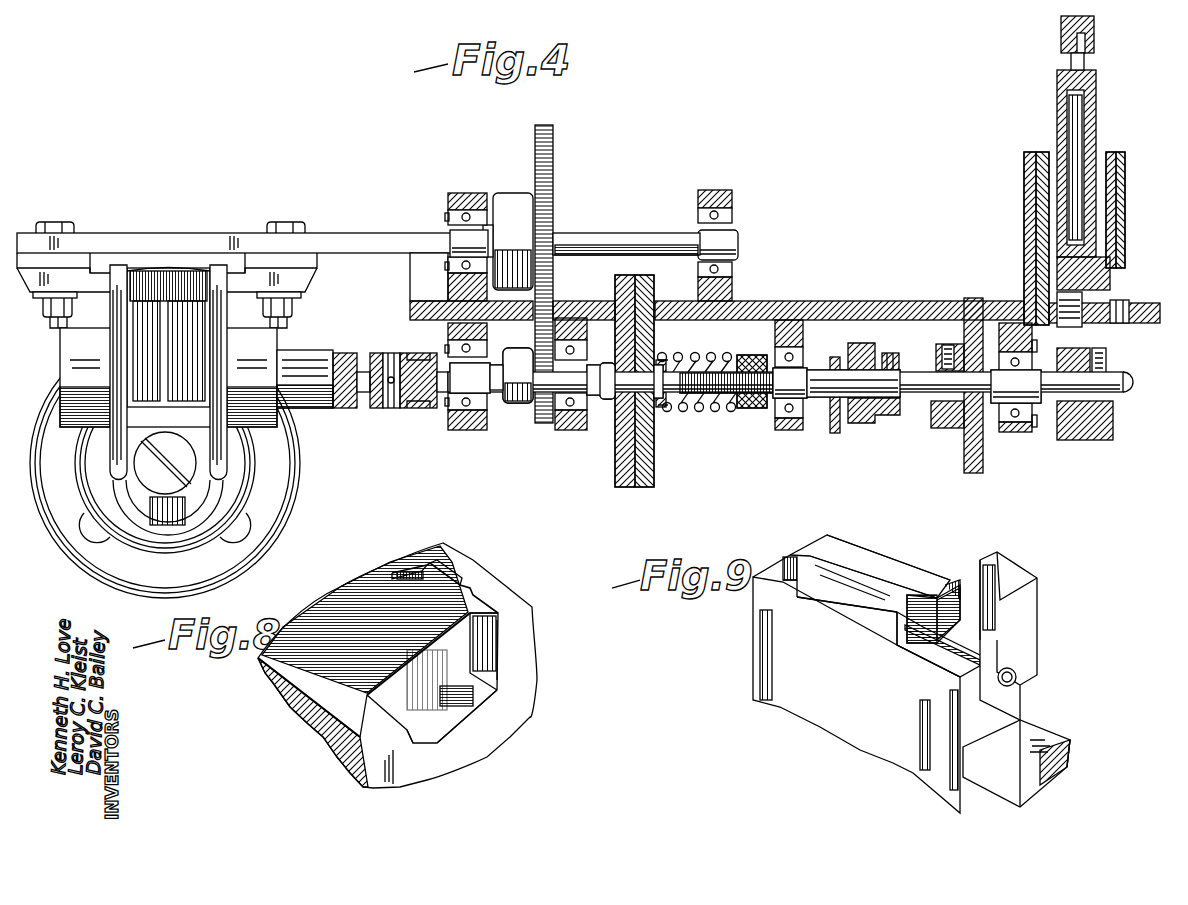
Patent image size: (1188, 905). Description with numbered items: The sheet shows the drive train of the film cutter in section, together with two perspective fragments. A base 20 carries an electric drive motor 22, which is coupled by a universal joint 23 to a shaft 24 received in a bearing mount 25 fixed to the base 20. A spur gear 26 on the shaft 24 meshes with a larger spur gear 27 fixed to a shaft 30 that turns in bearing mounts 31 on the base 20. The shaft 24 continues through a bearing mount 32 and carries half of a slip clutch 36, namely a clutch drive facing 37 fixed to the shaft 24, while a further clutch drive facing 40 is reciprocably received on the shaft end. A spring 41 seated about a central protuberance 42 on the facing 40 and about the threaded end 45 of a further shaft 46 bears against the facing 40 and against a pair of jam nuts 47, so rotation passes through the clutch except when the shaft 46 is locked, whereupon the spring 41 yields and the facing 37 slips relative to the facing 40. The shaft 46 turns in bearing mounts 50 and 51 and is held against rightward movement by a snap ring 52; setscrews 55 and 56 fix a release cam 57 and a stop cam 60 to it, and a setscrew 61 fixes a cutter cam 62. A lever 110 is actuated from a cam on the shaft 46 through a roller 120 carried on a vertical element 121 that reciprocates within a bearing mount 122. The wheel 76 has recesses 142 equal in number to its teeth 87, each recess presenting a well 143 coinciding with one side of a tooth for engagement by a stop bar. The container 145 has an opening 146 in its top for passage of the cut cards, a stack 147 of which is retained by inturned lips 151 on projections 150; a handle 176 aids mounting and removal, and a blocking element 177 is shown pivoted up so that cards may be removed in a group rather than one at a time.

In FIG. 4, the base 20 is at (362, 240).
In FIG. 4, the drive motor 22 is at (305, 488).
In FIG. 4, the universal joint 23 is at (378, 348).
In FIG. 4, the shaft 24 is at (420, 395).
In FIG. 4, the bearing mount 25 is at (465, 432).
In FIG. 4, the spur gear 26 is at (513, 405).
In FIG. 4, the larger spur gear 27 is at (537, 177).
In FIG. 4, the shaft 30 is at (610, 238).
In FIG. 4, the bearing mounts 31 is at (473, 193).
In FIG. 4, the bearing mount 32 is at (567, 428).
In FIG. 4, the slip clutch 36 is at (637, 492).
In FIG. 4, the clutch drive facing 37 is at (613, 468).
In FIG. 4, the clutch drive facing 40 is at (655, 473).
In FIG. 4, the spring 41 is at (682, 408).
In FIG. 4, the central protuberance 42 is at (678, 360).
In FIG. 4, the threaded end 45 is at (722, 388).
In FIG. 4, the shaft 46 is at (822, 400).
In FIG. 4, the jam nuts 47 is at (744, 355).
In FIG. 4, the bearing mount 50 is at (792, 427).
In FIG. 4, the bearing mount 51 is at (1020, 425).
In FIG. 4, the snap ring 52 is at (1000, 403).
In FIG. 4, the setscrew 55 is at (887, 358).
In FIG. 4, the setscrew 56 is at (947, 345).
In FIG. 4, the release cam 57 is at (867, 418).
In FIG. 4, the stop cam 60 is at (975, 470).
In FIG. 4, the setscrew 61 is at (1102, 352).
In FIG. 4, the cutter cam 62 is at (1090, 425).
In FIG. 8, the wheel 76 is at (465, 748).
In FIG. 8, the teeth 87 is at (465, 565).
In FIG. 4, the lever 110 is at (1061, 30).
In FIG. 4, the roller 120 is at (1072, 305).
In FIG. 4, the vertical element 121 is at (1057, 105).
In FIG. 4, the bearing mount 122 is at (1030, 182).
In FIG. 8, the recesses 142 is at (447, 683).
In FIG. 8, the well 143 is at (490, 653).
In FIG. 9, the container 145 is at (1048, 655).
In FIG. 9, the opening 146 is at (915, 650).
In FIG. 9, the stack 147 is at (885, 568).
In FIG. 9, the projections 150 is at (775, 575).
In FIG. 9, the inturned lips 151 is at (850, 540).
In FIG. 9, the handle 176 is at (1045, 752).
In FIG. 9, the blocking element 177 is at (1020, 607).